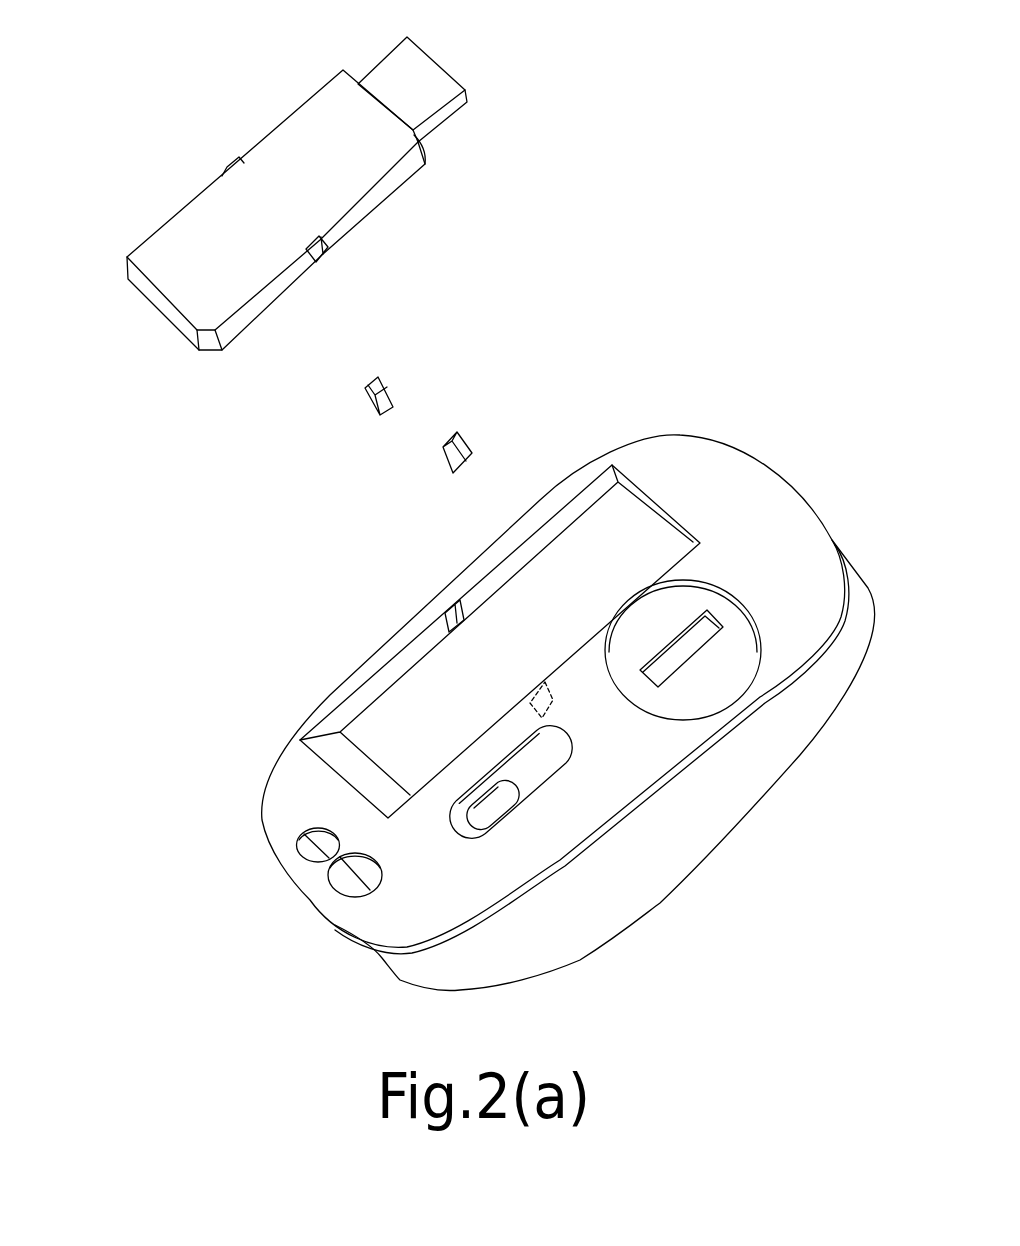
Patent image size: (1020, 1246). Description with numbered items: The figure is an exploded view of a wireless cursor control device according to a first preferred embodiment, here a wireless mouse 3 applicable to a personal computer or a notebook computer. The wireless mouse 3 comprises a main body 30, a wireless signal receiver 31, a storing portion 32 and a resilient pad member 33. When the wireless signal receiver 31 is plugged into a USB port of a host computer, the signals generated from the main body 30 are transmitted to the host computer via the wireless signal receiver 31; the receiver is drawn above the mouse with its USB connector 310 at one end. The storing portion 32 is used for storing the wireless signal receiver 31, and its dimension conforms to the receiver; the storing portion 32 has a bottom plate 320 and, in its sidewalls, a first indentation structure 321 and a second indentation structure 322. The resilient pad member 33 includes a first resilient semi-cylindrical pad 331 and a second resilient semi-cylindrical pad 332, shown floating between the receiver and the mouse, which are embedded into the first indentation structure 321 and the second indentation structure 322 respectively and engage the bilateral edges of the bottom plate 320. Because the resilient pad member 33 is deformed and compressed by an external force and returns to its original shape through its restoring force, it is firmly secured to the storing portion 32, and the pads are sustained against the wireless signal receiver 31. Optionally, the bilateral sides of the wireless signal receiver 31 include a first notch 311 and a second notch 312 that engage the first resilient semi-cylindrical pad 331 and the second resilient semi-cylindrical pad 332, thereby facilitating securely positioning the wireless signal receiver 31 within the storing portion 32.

The wireless mouse 3 is at (541, 616).
The main body 30 is at (758, 770).
The wireless signal receiver 31 is at (312, 183).
The USB connector 310 is at (415, 88).
The first notch 311 is at (228, 168).
The second notch 312 is at (319, 252).
The storing portion 32 is at (630, 550).
The bottom plate 320 is at (443, 708).
The first indentation structure 321 is at (453, 620).
The second indentation structure 322 is at (548, 700).
The resilient pad member 33 is at (390, 434).
The first resilient semi-cylindrical pad 331 is at (368, 402).
The second resilient semi-cylindrical pad 332 is at (443, 455).